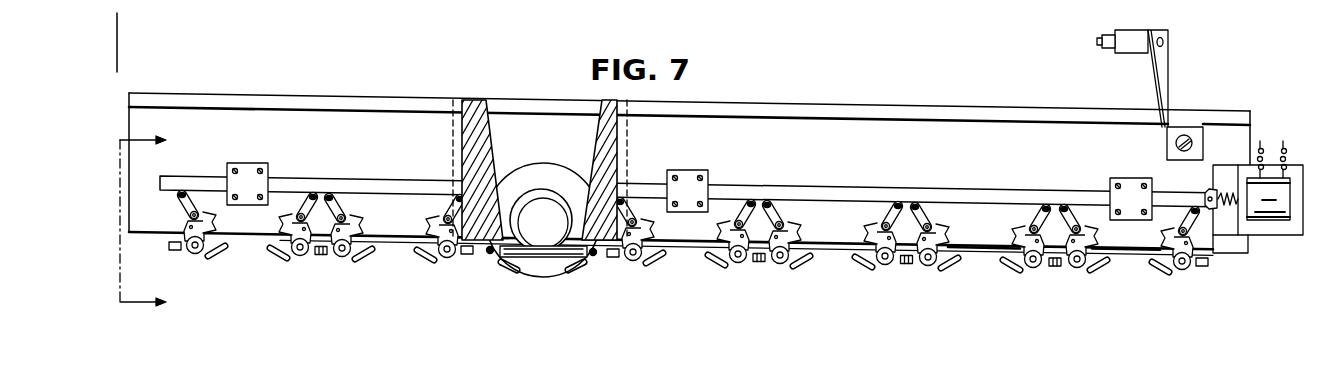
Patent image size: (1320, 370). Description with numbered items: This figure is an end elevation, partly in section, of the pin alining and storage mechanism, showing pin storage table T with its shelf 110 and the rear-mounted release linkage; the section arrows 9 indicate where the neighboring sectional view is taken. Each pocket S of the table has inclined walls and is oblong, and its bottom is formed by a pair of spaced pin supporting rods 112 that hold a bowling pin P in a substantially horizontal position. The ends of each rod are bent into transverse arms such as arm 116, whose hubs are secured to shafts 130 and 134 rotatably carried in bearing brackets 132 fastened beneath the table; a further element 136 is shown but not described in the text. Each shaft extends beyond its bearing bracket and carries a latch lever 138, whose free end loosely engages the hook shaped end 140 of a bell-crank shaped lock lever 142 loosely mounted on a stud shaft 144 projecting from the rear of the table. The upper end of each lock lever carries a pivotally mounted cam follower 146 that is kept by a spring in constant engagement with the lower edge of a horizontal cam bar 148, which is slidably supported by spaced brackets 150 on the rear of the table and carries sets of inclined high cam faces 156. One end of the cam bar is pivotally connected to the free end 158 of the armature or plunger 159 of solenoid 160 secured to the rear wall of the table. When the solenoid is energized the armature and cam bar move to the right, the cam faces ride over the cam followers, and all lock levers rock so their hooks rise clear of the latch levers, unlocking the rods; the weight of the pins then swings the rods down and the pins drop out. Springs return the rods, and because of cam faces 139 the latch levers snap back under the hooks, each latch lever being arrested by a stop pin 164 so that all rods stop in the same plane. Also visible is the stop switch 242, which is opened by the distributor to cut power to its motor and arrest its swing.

The section line 9- 9 is at (152, 224).
The shelf 110 is at (381, 99).
The pin supporting rods 112 is at (210, 258).
The supporting rod arm 116 is at (567, 243).
The shaft 130 is at (194, 251).
The bearing bracket 132 is at (166, 238).
The shaft 134 is at (331, 258).
The connecting bar 136 is at (1015, 247).
The latch lever 138 is at (213, 223).
The cam face 139 is at (329, 196).
The hook shaped end 140 is at (1092, 243).
The lock lever 142 is at (1027, 206).
The stud shaft 144 is at (1028, 225).
The cam follower 146 is at (912, 203).
The cam bar 148 is at (419, 176).
The bracket 150 is at (252, 165).
The high cam face 156 is at (730, 201).
The free end of armature 158 is at (1208, 192).
The armature or plunger 159 is at (1224, 194).
The solenoid 160 is at (1273, 221).
The stop pin 164 is at (189, 225).
The stop switch 242 is at (1128, 52).
The pin storage table T is at (302, 86).
The pocket S is at (486, 105).
The pin P is at (543, 164).